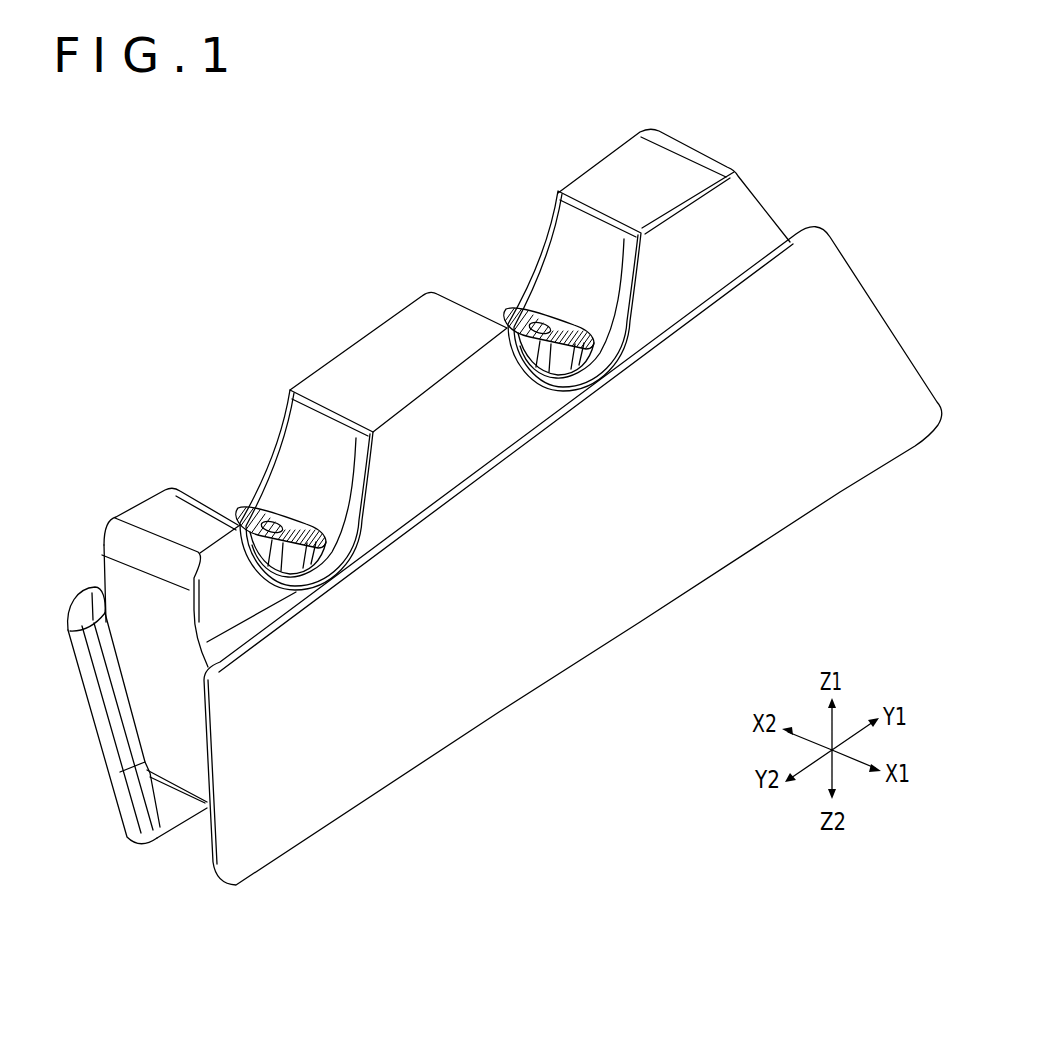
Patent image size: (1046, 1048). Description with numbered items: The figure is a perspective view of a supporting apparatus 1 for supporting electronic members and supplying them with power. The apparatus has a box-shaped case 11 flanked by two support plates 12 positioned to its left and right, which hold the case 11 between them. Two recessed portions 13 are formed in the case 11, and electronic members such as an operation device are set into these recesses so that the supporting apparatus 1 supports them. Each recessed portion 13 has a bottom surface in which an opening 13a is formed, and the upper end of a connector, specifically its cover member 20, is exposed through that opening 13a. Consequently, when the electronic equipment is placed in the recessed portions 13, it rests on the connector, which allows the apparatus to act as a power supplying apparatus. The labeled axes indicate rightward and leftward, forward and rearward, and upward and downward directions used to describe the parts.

The supporting apparatus 1 is at (318, 252).
The case 11 is at (763, 198).
The support plate 12 is at (890, 322).
The recessed portion 13 is at (292, 438).
The opening 13a is at (308, 530).
The cover member 20 is at (245, 507).